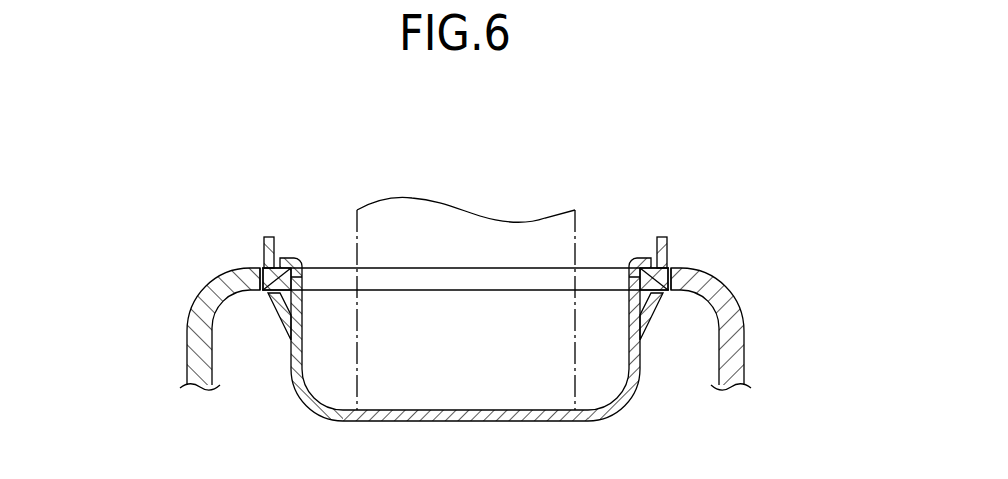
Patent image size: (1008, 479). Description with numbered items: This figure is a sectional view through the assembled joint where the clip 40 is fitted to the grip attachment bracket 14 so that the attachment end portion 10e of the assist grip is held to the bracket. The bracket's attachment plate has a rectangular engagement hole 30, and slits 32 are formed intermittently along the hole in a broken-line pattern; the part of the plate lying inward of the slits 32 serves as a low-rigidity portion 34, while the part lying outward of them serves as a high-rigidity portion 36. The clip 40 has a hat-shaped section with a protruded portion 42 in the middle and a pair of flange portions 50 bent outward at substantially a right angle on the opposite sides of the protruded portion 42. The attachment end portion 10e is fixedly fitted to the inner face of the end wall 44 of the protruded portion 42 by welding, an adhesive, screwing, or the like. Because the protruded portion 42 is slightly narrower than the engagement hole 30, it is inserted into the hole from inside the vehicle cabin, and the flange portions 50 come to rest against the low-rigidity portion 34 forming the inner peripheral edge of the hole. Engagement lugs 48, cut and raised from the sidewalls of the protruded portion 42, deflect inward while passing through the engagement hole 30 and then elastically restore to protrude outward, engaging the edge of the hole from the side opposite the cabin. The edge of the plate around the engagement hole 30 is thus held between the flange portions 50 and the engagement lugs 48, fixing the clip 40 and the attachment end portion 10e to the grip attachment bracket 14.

The attachment end portion 10e is at (452, 217).
The grip attachment bracket 14 is at (157, 286).
The engagement hole 30 is at (294, 277).
The slits 32 is at (258, 265).
The low-rigidity portion 34 is at (288, 258).
The high-rigidity portion 36 is at (240, 276).
The clip 40 is at (671, 198).
The protruded portion 42 is at (620, 422).
The end wall 44 is at (460, 418).
The engagement lugs 48 is at (281, 314).
The flange portions 50 is at (284, 261).